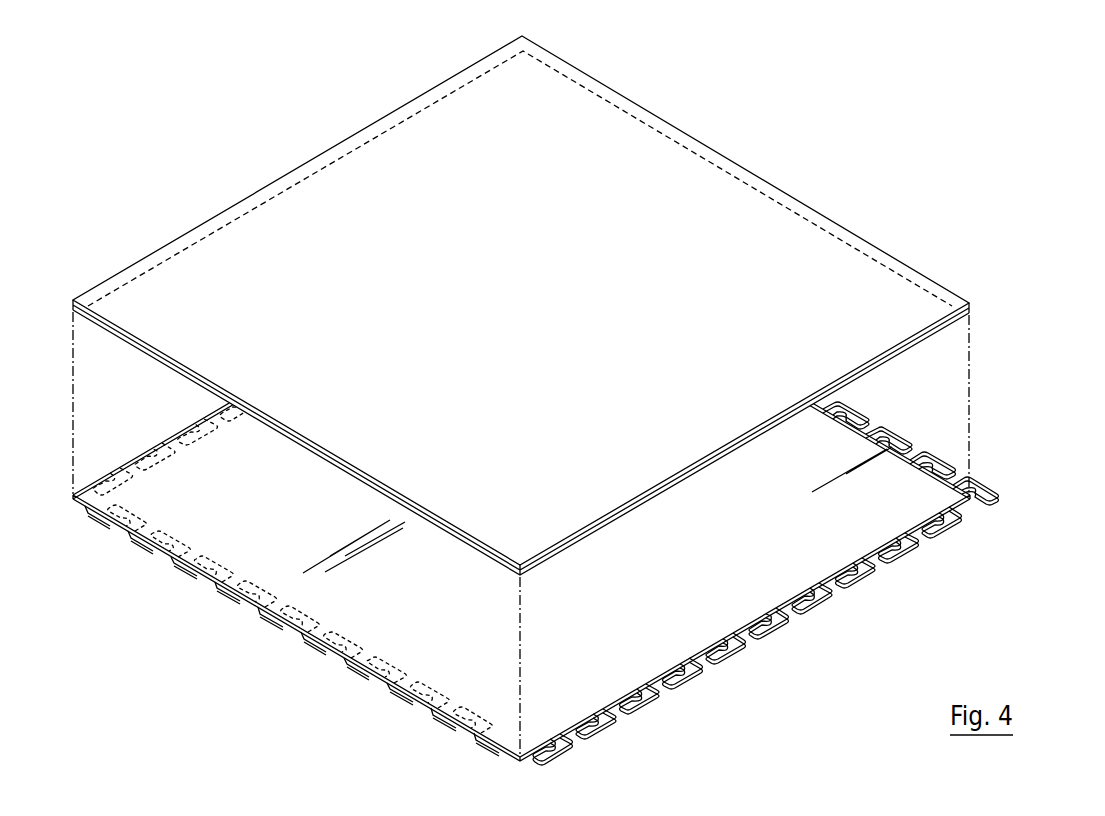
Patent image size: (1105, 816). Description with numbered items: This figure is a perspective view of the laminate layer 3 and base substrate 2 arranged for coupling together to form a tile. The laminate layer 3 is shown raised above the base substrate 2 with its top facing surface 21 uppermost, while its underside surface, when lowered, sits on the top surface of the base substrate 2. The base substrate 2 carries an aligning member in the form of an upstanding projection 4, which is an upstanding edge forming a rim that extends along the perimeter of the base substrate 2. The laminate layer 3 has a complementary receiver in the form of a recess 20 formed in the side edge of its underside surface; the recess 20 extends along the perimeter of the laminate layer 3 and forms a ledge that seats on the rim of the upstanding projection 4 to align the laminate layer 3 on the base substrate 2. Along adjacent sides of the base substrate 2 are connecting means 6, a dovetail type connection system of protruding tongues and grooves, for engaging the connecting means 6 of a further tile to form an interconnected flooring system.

The base substrate 2 is at (557, 575).
The laminate layer 3 is at (840, 272).
The upstanding projection 4 is at (970, 502).
The connecting means 6 is at (771, 665).
The recess 20 is at (969, 305).
The top facing surface 21 is at (503, 323).